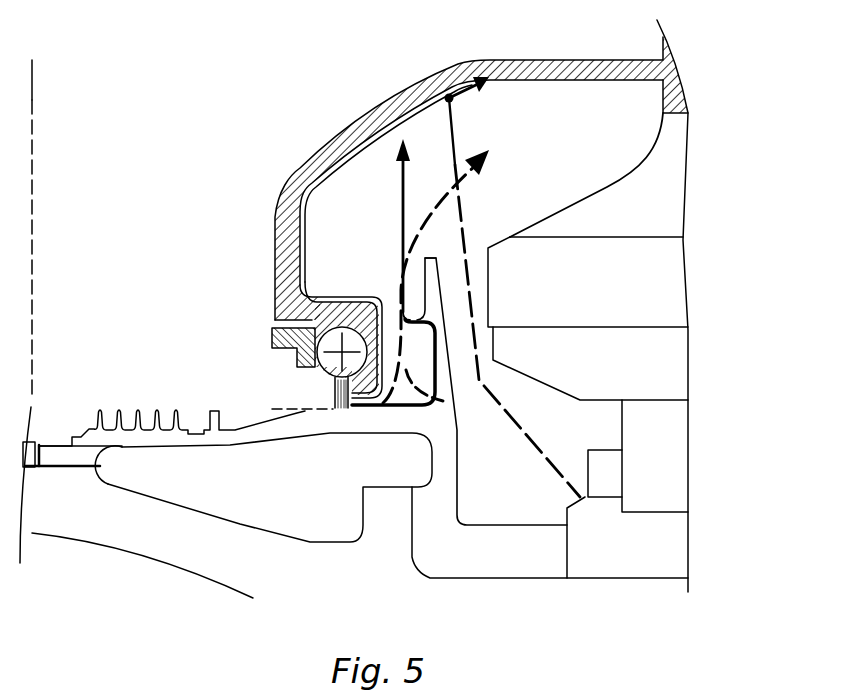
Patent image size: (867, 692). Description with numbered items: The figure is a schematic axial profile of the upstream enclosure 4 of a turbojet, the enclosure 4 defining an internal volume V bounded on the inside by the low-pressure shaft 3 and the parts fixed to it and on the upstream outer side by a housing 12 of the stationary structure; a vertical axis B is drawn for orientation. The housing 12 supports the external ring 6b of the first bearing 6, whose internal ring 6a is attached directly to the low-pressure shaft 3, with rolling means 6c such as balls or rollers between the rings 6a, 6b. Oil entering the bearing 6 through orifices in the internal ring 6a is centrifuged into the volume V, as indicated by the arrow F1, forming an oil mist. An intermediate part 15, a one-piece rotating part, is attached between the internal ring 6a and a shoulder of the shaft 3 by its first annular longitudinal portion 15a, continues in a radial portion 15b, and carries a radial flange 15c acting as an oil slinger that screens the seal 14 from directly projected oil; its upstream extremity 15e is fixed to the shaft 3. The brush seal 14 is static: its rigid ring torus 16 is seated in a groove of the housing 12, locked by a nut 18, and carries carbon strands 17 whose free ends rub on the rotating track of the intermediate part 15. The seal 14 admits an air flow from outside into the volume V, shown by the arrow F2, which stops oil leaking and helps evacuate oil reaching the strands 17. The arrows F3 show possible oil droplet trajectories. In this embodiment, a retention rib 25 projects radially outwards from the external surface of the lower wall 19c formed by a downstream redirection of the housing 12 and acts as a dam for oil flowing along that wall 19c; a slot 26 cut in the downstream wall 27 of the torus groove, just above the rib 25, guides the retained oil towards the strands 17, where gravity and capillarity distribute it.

The low-pressure shaft 3 is at (182, 547).
The upstream enclosure 4 is at (427, 148).
The first bearing 6 is at (609, 602).
The internal ring 6a is at (657, 547).
The external ring 6b is at (657, 364).
The rolling means 6c is at (657, 455).
The housing 12 is at (568, 63).
The brush seal 14 is at (310, 376).
The intermediate part 15 is at (472, 490).
The first annular longitudinal portion 15a is at (472, 558).
The radial portion 15b is at (433, 513).
The radial flange 15c is at (433, 268).
The upstream extremity 15e is at (108, 435).
The ring torus 16 is at (330, 348).
The strands 17 is at (337, 395).
The nut 18 is at (313, 334).
The lower wall 19c is at (352, 318).
The oil retention rib 25 is at (297, 252).
The slot 26 is at (306, 299).
The downstream wall 27 is at (384, 333).
The vertical axis B is at (32, 86).
The internal volume V is at (556, 141).
The arrow F1 is at (454, 147).
The arrow F2 is at (443, 401).
The arrows F3 is at (377, 134).